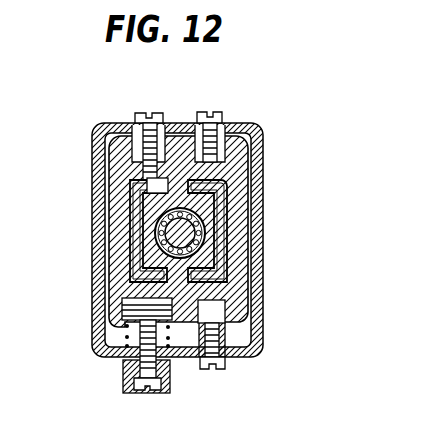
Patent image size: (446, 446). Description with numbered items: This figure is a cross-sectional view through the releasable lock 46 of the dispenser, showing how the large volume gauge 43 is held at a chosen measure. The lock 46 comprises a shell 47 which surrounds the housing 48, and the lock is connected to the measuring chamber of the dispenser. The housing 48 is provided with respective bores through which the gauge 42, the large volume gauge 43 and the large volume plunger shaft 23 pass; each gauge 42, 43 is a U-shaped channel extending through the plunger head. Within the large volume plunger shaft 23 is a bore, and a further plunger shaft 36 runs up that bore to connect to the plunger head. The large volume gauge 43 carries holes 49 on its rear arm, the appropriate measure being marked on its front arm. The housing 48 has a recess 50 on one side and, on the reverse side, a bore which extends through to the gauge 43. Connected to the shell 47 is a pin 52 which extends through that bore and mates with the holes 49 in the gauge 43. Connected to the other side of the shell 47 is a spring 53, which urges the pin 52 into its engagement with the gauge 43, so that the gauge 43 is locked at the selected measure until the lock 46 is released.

The large volume plunger shaft 23 is at (156, 241).
The plunger shaft 36 is at (252, 196).
The gauge 42 is at (230, 205).
The large volume gauge 43 is at (137, 222).
The releasable lock 46 is at (270, 346).
The shell 47 is at (261, 221).
The housing 48 is at (228, 295).
The holes 49 is at (141, 185).
The recess 50 is at (108, 349).
The pin 52 is at (158, 132).
The spring 53 is at (166, 352).